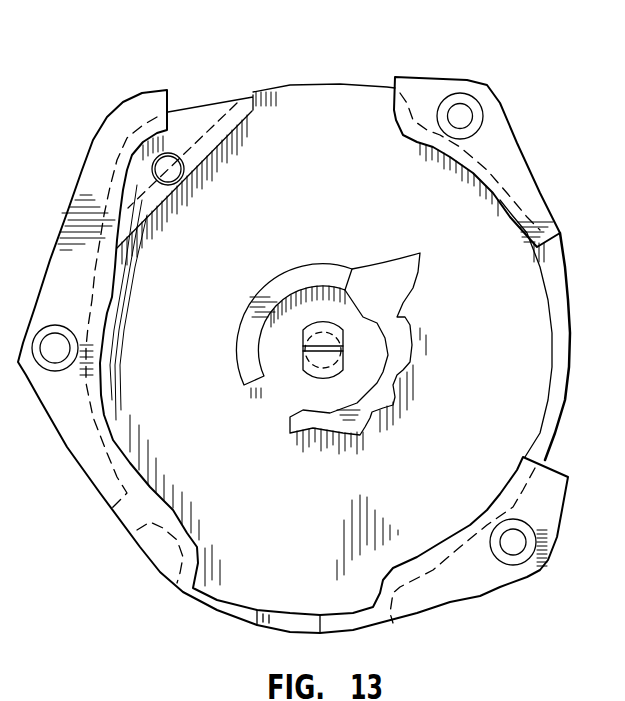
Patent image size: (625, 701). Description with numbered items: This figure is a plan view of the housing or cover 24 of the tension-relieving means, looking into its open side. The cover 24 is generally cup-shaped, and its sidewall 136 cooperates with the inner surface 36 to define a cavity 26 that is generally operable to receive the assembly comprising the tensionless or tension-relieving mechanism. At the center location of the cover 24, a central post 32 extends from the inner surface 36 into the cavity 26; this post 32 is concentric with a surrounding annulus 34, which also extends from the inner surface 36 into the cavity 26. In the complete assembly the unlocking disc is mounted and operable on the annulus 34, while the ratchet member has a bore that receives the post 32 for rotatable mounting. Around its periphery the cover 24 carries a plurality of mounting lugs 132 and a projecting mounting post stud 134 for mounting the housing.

The housing or cover 24 is at (568, 113).
The cavity 26 is at (302, 528).
The central post 32 is at (307, 372).
The annulus 34 is at (418, 256).
The inner surface 36 is at (337, 117).
The mounting lugs 132 is at (467, 93).
The projecting mounting post stud 134 is at (160, 180).
The sidewall 136 is at (567, 310).